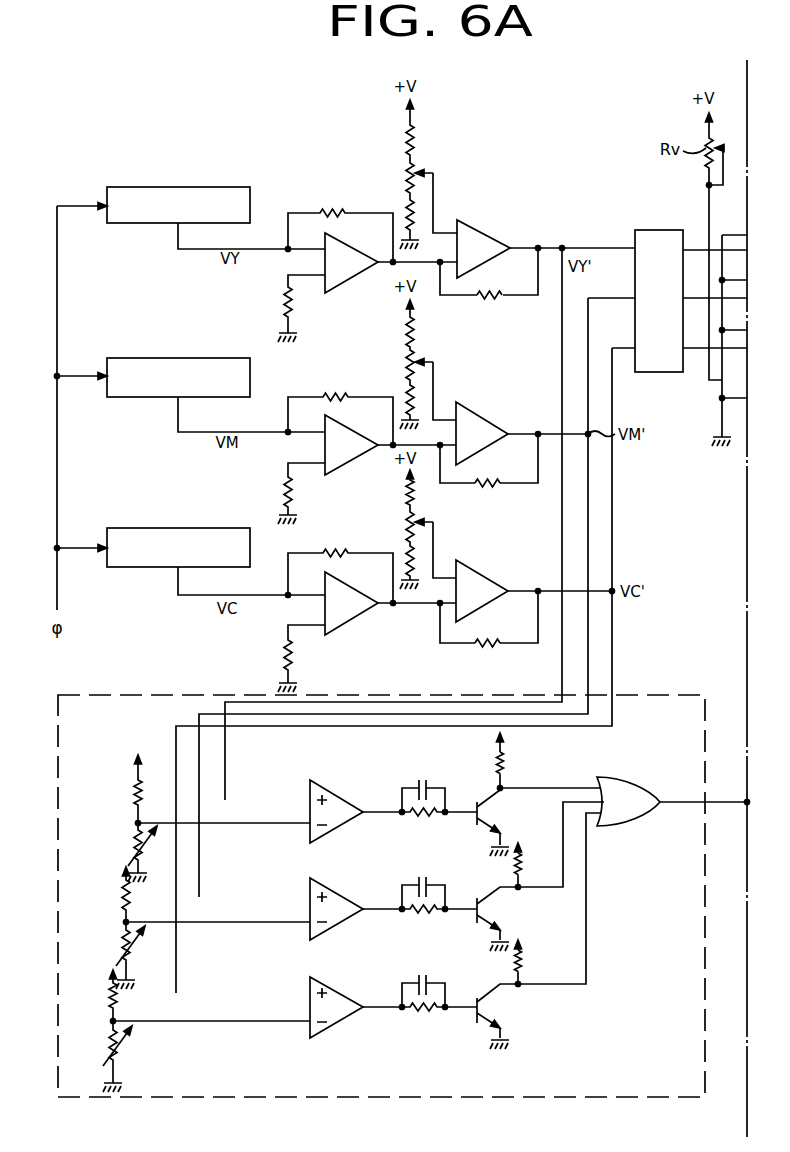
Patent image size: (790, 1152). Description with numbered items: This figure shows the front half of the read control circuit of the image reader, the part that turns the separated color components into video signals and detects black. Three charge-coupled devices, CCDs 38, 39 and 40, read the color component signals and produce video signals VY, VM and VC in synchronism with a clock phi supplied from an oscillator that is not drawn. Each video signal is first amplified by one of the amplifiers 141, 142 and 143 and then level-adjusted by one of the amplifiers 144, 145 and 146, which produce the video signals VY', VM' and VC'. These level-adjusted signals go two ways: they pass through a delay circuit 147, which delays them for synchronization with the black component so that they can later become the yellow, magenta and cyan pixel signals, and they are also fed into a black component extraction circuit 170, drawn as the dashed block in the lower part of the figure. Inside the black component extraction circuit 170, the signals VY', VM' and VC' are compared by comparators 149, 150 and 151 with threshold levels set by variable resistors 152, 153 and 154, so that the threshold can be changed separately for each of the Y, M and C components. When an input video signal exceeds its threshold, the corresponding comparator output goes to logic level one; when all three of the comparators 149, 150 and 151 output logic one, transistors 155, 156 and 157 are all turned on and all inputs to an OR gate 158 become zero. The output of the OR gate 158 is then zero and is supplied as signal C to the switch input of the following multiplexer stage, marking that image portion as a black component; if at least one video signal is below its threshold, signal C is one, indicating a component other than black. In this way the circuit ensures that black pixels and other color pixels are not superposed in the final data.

The CCD 38 is at (183, 186).
The CCD 39 is at (183, 357).
The CCD 40 is at (180, 527).
The amplifier 141 is at (354, 278).
The amplifier 142 is at (354, 461).
The amplifier 143 is at (357, 619).
The amplifier 144 is at (479, 233).
The amplifier 145 is at (477, 414).
The amplifier 146 is at (477, 571).
The delay circuit 147 is at (656, 229).
The comparator 149 is at (341, 796).
The comparator 150 is at (339, 894).
The comparator 151 is at (337, 992).
The variable resistor 152 is at (126, 845).
The variable resistor 153 is at (116, 948).
The variable resistor 154 is at (106, 1047).
The transistor 155 is at (494, 806).
The transistor 156 is at (494, 907).
The transistor 157 is at (494, 1010).
The OR gate 158 is at (618, 827).
The black component extraction circuit 170 is at (661, 694).